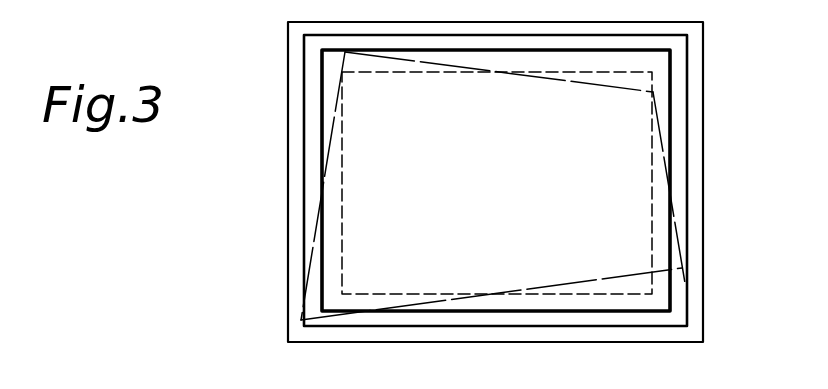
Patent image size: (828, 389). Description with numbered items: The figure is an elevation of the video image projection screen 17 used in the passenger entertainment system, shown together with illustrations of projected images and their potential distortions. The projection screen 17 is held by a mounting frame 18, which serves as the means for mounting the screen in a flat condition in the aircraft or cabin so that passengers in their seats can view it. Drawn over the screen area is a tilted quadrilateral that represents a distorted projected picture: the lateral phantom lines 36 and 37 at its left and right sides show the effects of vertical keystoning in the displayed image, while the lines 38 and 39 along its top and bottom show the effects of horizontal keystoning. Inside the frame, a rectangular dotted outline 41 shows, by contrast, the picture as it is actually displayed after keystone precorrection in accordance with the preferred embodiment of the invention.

The video image projection screen 17 is at (503, 211).
The mounting frame 18 is at (300, 193).
The lateral phantom line 36 is at (332, 147).
The lateral phantom line 37 is at (667, 160).
The line showing horizontal keystoning 38 is at (580, 85).
The line showing horizontal keystoning 39 is at (607, 278).
The rectangular dotted outline 41 is at (342, 247).